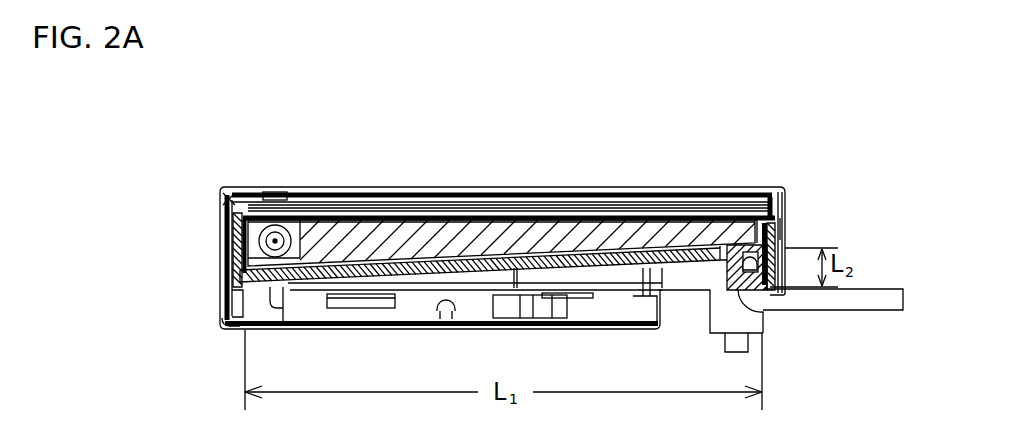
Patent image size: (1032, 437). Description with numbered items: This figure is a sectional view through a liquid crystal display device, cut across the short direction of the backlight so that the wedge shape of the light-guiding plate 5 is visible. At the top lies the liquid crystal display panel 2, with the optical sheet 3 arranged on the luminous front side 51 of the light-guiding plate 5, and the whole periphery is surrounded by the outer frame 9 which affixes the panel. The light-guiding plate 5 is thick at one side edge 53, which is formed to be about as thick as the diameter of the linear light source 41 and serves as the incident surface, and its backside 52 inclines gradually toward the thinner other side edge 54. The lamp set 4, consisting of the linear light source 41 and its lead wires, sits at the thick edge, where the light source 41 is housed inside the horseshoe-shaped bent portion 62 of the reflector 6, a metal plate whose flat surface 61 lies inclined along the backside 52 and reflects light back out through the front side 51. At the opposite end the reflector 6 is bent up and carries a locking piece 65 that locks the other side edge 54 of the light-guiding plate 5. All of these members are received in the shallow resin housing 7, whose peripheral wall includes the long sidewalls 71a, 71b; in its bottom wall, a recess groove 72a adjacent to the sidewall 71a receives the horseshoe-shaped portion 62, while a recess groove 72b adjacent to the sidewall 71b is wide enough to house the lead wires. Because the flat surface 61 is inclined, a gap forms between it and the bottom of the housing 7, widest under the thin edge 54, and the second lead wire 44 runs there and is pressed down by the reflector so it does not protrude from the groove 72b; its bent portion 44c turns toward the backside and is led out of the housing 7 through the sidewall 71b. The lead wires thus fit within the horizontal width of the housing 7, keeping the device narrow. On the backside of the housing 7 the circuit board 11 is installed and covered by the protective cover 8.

The linear light source 41 is at (222, 188).
The outer frame 9 is at (246, 193).
The side edge 53 is at (292, 228).
The liquid crystal display panel 2 is at (320, 201).
The optical sheet 3 is at (352, 205).
The light-guiding plate 5 is at (402, 222).
The front side 51 is at (590, 224).
The other side edge 54 is at (757, 262).
The locking piece 65 is at (771, 240).
The bent portion 44c is at (784, 228).
The long sidewall 71b is at (786, 248).
The bent portion 62 is at (232, 216).
The lamp set 4 is at (234, 245).
The housing 7 is at (238, 279).
The recess groove 72a is at (238, 293).
The long sidewall 71a is at (226, 324).
The reflector 6 is at (344, 284).
The protective cover 8 is at (408, 326).
The flat surface 61 is at (513, 275).
The circuit board 11 is at (566, 297).
The backside 52 is at (600, 258).
The recess groove 72b is at (768, 311).
The second lead wire 44 is at (887, 311).